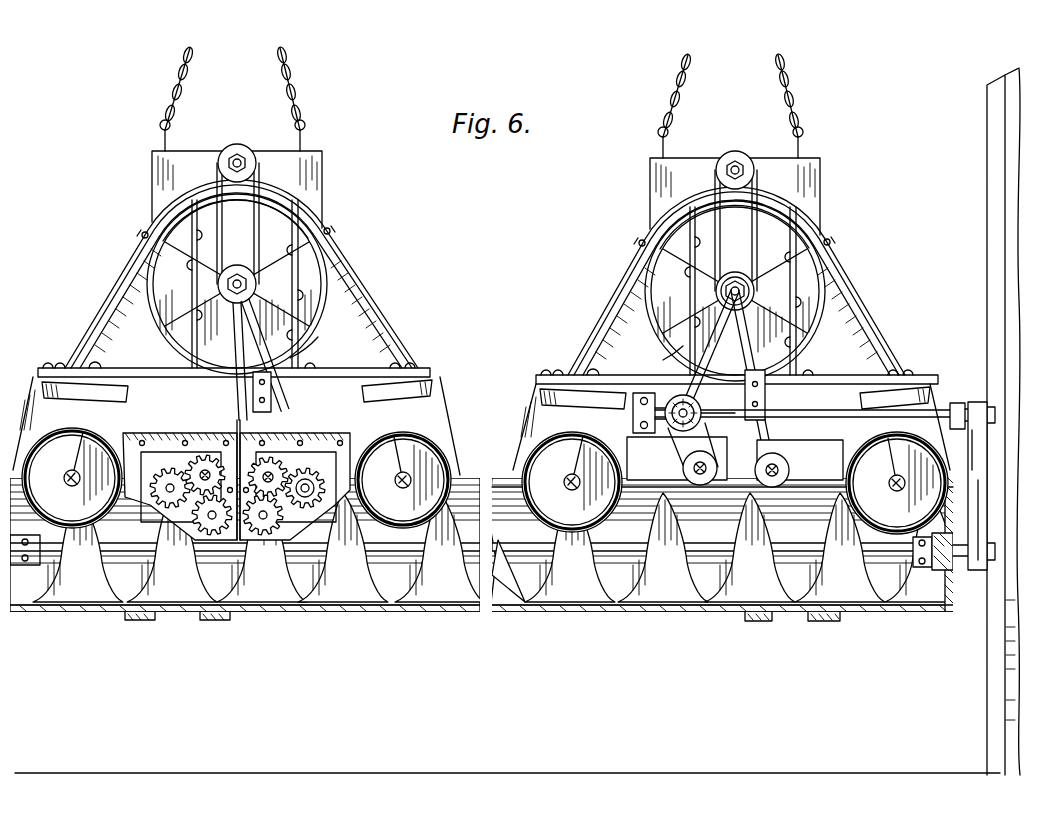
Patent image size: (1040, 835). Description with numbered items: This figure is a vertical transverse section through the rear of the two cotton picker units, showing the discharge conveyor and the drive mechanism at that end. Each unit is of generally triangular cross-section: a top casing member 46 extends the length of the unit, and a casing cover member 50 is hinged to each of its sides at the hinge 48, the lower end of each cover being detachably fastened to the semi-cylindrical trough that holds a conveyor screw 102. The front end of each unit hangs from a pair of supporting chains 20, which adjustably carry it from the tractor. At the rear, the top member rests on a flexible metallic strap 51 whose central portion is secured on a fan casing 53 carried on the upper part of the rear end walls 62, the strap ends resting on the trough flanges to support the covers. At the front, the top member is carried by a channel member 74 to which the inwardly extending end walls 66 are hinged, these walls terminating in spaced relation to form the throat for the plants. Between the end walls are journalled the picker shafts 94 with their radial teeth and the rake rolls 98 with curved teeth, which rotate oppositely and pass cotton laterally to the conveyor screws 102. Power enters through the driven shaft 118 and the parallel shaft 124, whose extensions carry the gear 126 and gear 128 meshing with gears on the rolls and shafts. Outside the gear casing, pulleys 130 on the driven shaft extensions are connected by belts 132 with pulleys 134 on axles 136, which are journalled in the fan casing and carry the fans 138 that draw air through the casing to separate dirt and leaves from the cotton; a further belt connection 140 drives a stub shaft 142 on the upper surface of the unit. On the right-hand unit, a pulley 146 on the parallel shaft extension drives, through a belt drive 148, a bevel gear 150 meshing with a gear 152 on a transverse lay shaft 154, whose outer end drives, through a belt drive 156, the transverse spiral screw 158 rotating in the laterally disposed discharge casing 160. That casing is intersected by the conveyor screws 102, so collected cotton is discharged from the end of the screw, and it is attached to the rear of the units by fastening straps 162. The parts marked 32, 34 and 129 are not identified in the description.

The supporting chains or cables 20 is at (282, 72).
The mounting brackets 32 is at (84, 392).
The drive wheel 34 is at (218, 288).
The top casing member 46 is at (270, 192).
The hinge 48 is at (140, 234).
The casing cover member 50 is at (134, 257).
The flexible metallic strap 51 is at (343, 252).
The fan casing 53 is at (318, 300).
The rear end walls 62 is at (146, 380).
The front end walls 66 is at (850, 307).
The channel member 74 is at (160, 174).
The picker shafts 94 is at (208, 522).
The rake rolls 98 is at (170, 478).
The conveyor screws 102 is at (82, 440).
The driven shaft 118 is at (266, 464).
The parallel shaft 124 is at (683, 468).
The gear 126 is at (300, 476).
The gear 128 is at (210, 462).
The gear hub 129 is at (204, 466).
The pulleys 130 is at (790, 470).
The belts 132 is at (276, 378).
The pulleys 134 is at (716, 292).
The axles 136 is at (238, 266).
The fans or blowers 138 is at (283, 250).
The belt connection 140 is at (260, 216).
The stub shaft 142 is at (240, 152).
The pulley 146 is at (716, 488).
The belt drive 148 is at (705, 411).
The bevel gear 150 is at (652, 391).
The gear 152 is at (686, 400).
The lay shaft 154 is at (852, 404).
The belt drive 156 is at (953, 404).
The spiral screw 158 is at (664, 556).
The discharge casing 160 is at (742, 557).
The fastening straps 162 is at (812, 623).